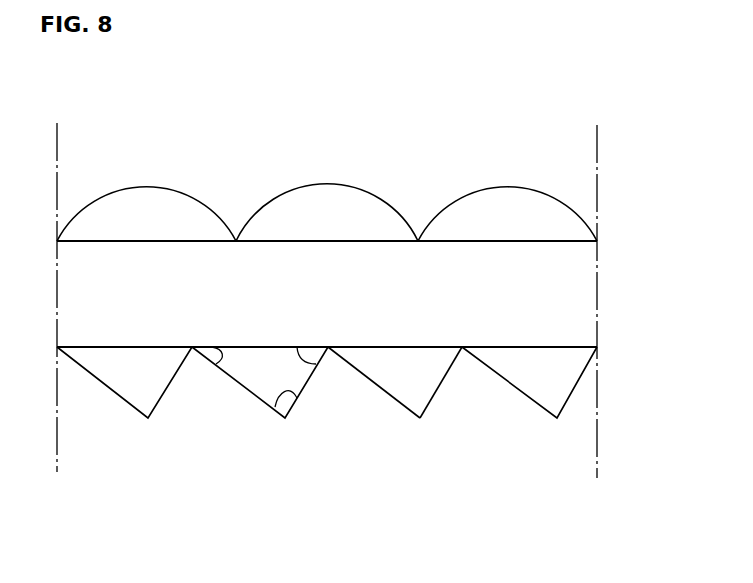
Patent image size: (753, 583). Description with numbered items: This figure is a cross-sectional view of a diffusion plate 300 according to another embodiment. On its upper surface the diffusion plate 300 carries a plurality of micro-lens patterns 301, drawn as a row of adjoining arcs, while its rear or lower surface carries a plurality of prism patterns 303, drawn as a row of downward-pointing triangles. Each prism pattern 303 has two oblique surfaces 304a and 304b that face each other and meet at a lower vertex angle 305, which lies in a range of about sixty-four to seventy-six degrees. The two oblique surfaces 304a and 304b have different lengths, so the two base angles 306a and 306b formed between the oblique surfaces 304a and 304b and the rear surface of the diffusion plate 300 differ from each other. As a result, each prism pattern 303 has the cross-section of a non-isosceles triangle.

The diffusion plate 300 is at (583, 301).
The micro-lens patterns 301 is at (526, 172).
The prism patterns 303 is at (566, 424).
The oblique surface 304a is at (382, 392).
The oblique surface 304b is at (435, 395).
The lower vertex angle 305 is at (297, 398).
The base angle 306a is at (218, 362).
The base angle 306b is at (297, 347).